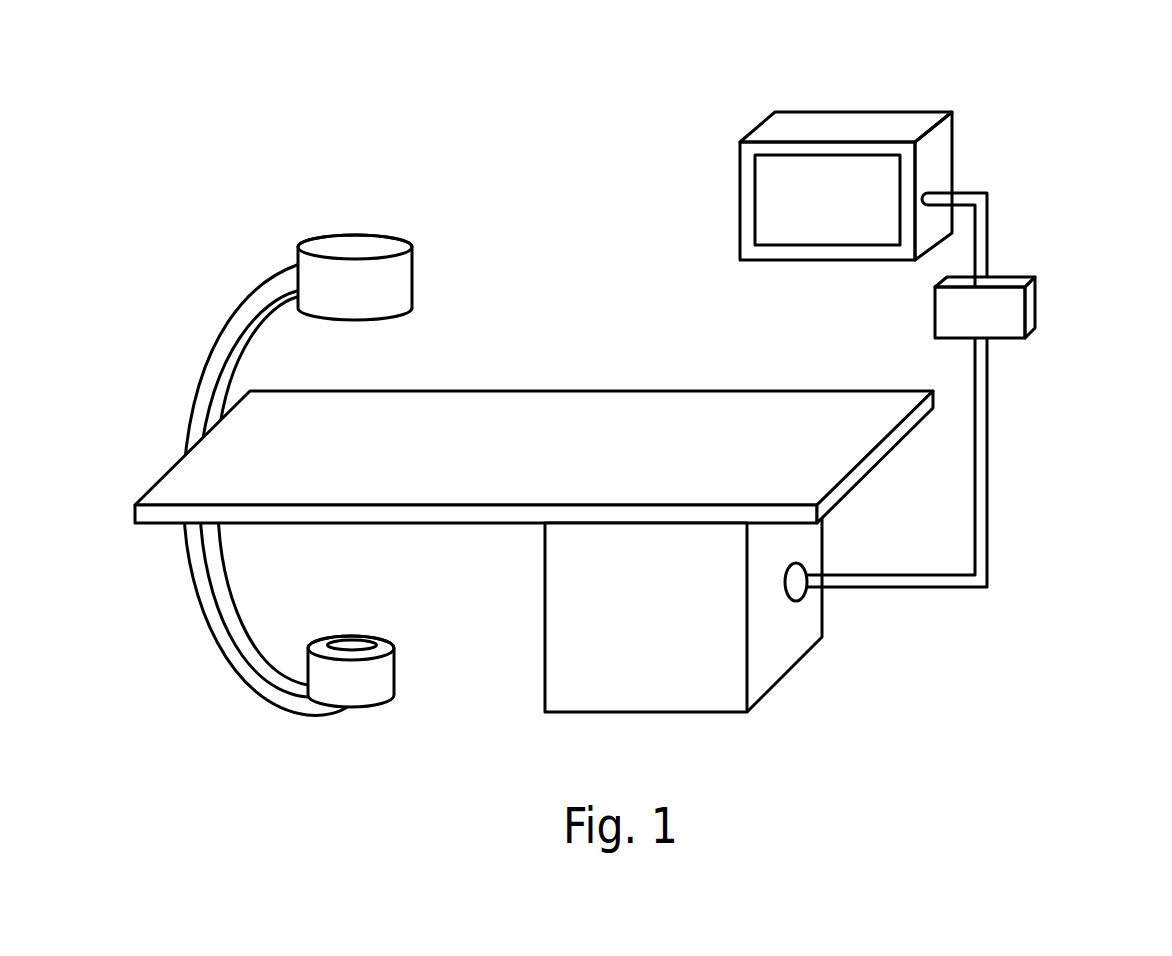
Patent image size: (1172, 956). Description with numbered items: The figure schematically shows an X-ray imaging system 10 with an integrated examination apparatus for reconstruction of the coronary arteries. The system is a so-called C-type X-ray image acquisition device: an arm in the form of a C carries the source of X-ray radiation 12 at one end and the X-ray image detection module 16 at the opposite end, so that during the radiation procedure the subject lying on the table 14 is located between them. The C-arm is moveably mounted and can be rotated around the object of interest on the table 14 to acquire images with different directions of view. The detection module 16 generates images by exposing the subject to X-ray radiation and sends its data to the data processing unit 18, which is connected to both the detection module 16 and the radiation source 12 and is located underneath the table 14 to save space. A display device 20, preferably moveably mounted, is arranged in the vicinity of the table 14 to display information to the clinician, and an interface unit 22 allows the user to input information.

The X-ray imaging system 10 is at (170, 324).
The source of X-ray radiation 12 is at (380, 673).
The table 14 is at (530, 422).
The X-ray image detection module 16 is at (353, 245).
The data processing unit 18 is at (775, 648).
The display device 20 is at (837, 162).
The interface unit 22 is at (1010, 307).